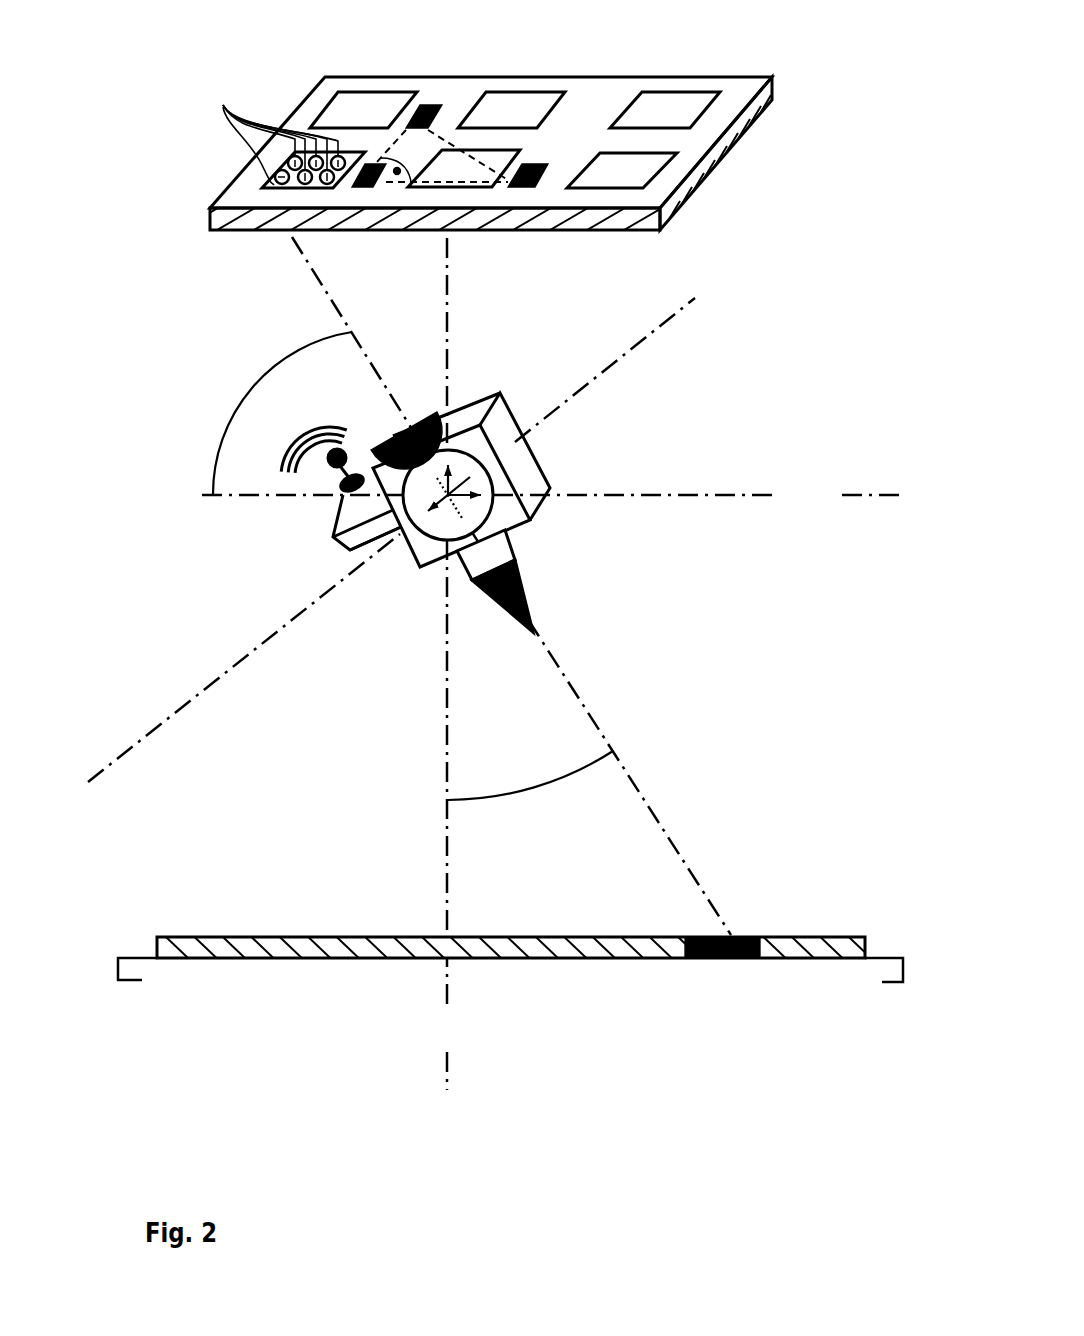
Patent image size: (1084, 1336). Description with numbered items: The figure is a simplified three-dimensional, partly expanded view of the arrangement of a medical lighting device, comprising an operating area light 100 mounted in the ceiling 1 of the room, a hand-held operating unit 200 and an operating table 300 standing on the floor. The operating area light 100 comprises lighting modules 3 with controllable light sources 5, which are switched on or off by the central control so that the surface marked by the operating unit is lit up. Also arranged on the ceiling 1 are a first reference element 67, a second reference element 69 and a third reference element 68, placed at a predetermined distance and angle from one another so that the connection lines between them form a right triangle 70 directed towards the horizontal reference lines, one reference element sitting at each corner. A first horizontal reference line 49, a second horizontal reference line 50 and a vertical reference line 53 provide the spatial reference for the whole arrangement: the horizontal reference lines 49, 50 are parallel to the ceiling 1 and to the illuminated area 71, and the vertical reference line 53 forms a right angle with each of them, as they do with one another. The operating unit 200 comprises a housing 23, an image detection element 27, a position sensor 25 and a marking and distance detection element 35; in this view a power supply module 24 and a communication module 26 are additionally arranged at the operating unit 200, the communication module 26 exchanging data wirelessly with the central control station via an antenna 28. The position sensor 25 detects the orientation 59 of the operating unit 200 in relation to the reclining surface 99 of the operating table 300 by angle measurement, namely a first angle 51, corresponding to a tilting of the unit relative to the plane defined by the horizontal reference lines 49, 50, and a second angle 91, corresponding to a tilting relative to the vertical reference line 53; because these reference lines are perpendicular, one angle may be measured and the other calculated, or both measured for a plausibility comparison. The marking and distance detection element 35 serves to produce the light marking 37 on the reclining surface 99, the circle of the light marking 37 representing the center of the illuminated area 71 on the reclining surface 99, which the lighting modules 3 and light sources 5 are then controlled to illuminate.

The operating area light 100 is at (748, 67).
The ceiling 1 is at (716, 160).
The lighting modules 3 is at (338, 110).
The controllable light sources 5 is at (278, 130).
The first reference element 67 is at (362, 186).
The third reference element 68 is at (433, 106).
The second reference element 69 is at (548, 180).
The right triangle 70 is at (460, 144).
The operating unit 200 is at (205, 349).
The housing 23 is at (480, 443).
The position sensor 25 is at (478, 485).
The image detection element 27 is at (433, 413).
The antenna 28 is at (345, 466).
The communication module 26 is at (333, 503).
The power supply module 24 is at (352, 530).
The marking and distance detection element 35 is at (517, 590).
The first angle 51 is at (285, 388).
The orientation 59 is at (627, 770).
The second angle 91 is at (472, 763).
The first horizontal reference line 49 is at (800, 512).
The second horizontal reference line 50 is at (170, 752).
The vertical reference line 53 is at (474, 1050).
The operating table 300 is at (708, 1074).
The illuminated area 71 is at (835, 948).
The light marking 37 is at (745, 937).
The reclining surface 99 is at (895, 968).